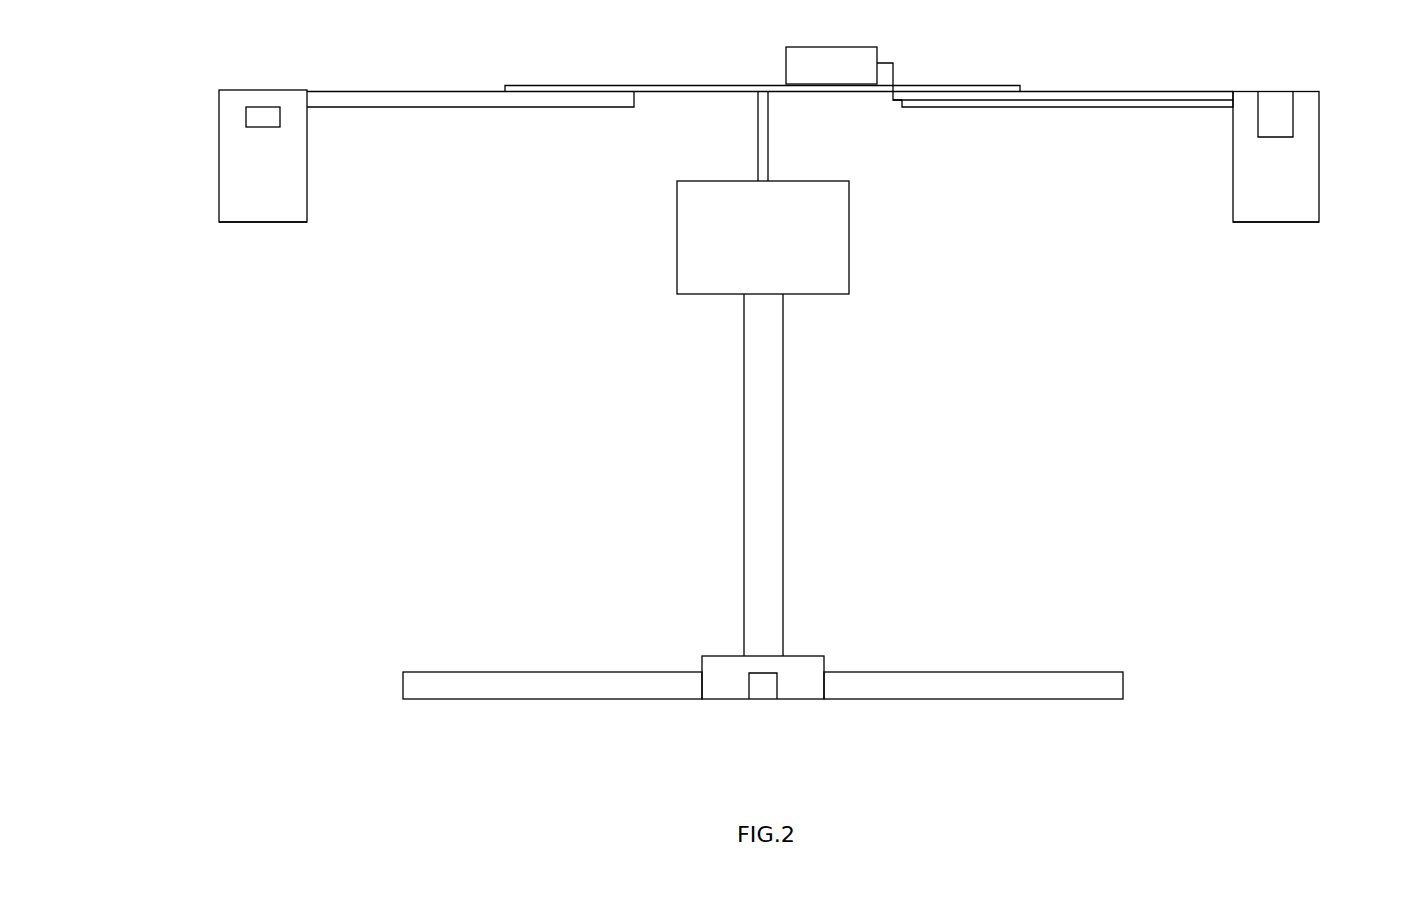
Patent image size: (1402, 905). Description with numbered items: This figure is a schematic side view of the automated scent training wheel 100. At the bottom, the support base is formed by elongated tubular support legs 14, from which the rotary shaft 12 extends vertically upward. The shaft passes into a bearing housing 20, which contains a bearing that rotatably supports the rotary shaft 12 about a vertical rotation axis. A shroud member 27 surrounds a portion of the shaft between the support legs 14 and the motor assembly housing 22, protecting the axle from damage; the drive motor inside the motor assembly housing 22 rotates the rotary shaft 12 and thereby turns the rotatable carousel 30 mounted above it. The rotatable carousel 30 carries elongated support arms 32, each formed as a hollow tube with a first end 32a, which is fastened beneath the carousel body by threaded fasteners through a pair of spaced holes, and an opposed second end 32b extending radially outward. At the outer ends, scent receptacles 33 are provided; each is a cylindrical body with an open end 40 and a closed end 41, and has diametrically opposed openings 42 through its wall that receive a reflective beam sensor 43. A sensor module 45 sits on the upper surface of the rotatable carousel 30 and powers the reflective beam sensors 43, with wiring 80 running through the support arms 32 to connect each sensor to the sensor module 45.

The automated scent training wheel 100 is at (468, 528).
The rotary shaft 12 is at (768, 134).
The support legs 14 is at (553, 671).
The bearing housing 20 is at (805, 655).
The motor assembly housing 22 is at (850, 250).
The shroud member 27 is at (784, 490).
The rotatable carousel 30 is at (718, 93).
The support arms 32 is at (488, 108).
The first end of support arm 32a is at (926, 126).
The second end of support arm 32b is at (1233, 84).
The scent receptacle 33 is at (1320, 196).
The open end 40 is at (282, 89).
The closed end 41 is at (262, 223).
The openings 42 is at (1293, 115).
The reflective beam sensor 43 is at (260, 118).
The sensor module 45 is at (832, 46).
The wiring 80 is at (1118, 86).